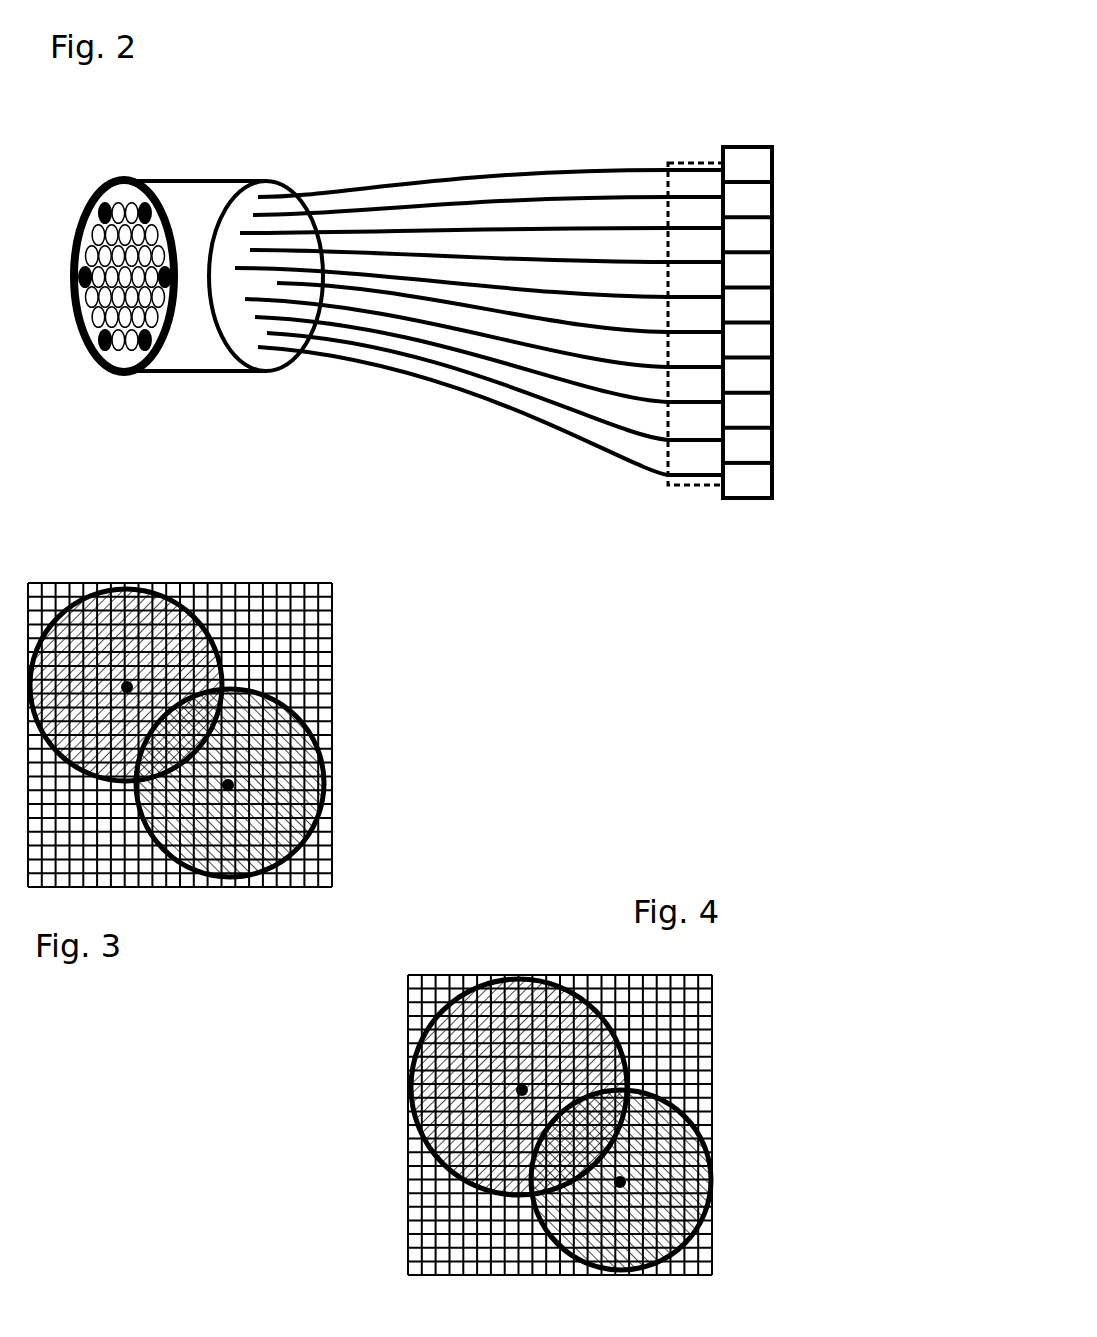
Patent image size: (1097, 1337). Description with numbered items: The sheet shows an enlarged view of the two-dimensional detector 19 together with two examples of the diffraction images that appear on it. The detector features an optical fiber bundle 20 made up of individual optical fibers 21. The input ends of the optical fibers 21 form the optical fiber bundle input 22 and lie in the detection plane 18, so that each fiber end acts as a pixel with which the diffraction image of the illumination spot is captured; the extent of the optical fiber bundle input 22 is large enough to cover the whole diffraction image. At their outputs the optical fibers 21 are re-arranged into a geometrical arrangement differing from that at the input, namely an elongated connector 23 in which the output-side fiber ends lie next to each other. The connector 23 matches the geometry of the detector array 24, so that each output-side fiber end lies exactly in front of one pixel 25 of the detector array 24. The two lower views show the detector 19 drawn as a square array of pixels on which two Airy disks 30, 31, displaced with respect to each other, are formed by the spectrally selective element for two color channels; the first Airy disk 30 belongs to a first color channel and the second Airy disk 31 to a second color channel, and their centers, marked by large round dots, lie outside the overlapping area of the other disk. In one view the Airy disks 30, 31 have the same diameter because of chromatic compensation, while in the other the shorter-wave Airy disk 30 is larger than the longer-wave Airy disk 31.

In FIG. 2, the detection plane 18 is at (125, 373).
In FIG. 2, the two-dimensional detector 19 is at (597, 306).
In FIG. 3, the two-dimensional detector 19 is at (261, 695).
In FIG. 4, the two-dimensional detector 19 is at (568, 1119).
In FIG. 2, the optical fiber bundle 20 is at (207, 265).
In FIG. 2, the optical fiber 21 is at (327, 193).
In FIG. 3, the optical fiber bundle input 22 is at (332, 670).
In FIG. 4, the optical fiber bundle input 22 is at (417, 1223).
In FIG. 2, the elongated connector 23 is at (668, 182).
In FIG. 2, the detector array 24 is at (724, 316).
In FIG. 2, the pixel 25 is at (745, 485).
In FIG. 3, the first Airy disk 30 is at (109, 585).
In FIG. 4, the first Airy disk 30 is at (490, 977).
In FIG. 3, the second Airy disk 31 is at (212, 885).
In FIG. 4, the second Airy disk 31 is at (680, 1110).